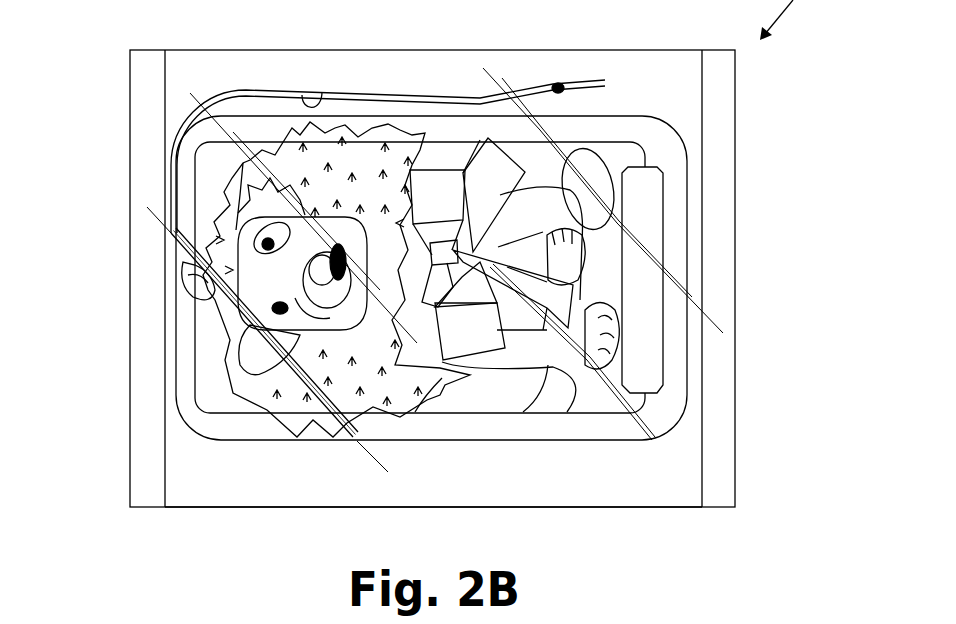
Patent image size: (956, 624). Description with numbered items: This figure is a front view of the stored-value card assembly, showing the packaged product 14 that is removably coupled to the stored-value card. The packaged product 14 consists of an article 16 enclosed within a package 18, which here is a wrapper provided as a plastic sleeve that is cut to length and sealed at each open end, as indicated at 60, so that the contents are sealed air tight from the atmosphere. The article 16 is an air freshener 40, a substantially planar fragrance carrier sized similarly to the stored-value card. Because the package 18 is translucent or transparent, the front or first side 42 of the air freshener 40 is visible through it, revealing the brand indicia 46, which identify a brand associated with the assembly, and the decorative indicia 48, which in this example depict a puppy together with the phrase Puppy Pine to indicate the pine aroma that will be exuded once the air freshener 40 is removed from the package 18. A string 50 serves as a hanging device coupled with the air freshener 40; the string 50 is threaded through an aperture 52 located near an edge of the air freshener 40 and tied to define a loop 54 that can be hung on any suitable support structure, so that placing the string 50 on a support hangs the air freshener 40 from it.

The packaged product 14 is at (639, 76).
The article 16 is at (678, 365).
The package 18 is at (221, 493).
The air freshener 40 is at (680, 211).
The first side 42 is at (582, 423).
The brand indicia 46 is at (620, 155).
The decorative indicia 48 is at (441, 420).
The string 50 is at (420, 100).
The aperture 52 is at (193, 285).
The loop 54 is at (322, 95).
The sealed end 60 is at (150, 141).